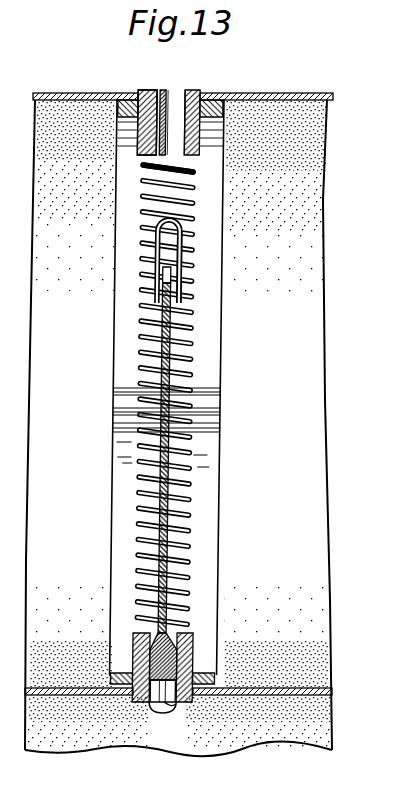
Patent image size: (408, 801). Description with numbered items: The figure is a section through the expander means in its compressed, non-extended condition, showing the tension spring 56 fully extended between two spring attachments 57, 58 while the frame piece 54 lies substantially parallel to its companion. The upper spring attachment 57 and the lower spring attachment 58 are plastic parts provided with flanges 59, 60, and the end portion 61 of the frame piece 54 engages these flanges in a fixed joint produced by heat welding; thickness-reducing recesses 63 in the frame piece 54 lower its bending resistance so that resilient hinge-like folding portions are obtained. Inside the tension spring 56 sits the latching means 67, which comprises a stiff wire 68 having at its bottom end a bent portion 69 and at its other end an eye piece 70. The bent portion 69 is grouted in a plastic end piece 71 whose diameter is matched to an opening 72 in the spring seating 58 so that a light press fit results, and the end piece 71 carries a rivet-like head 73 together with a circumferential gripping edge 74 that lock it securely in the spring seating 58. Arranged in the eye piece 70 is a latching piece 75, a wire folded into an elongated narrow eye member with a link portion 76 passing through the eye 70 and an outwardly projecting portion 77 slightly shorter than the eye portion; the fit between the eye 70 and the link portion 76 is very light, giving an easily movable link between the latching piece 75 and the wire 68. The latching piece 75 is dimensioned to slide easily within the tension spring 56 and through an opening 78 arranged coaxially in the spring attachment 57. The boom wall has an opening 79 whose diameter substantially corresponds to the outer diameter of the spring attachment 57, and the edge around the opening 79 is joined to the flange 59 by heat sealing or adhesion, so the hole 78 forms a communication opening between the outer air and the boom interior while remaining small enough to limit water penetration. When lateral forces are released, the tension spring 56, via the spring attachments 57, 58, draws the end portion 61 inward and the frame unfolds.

The frame piece 54 is at (118, 302).
The tension spring 56 is at (198, 457).
The spring attachment 57 is at (200, 93).
The spring attachment 58 is at (186, 672).
The flange 59 is at (250, 97).
The flange 60 is at (213, 690).
The end portion 61 is at (128, 112).
The thickness-reducing recess 63 is at (118, 398).
The latching means 67 is at (158, 229).
The stiff wire 68 is at (179, 394).
The bent portion 69 is at (184, 658).
The eye piece 70 is at (174, 274).
The plastic end piece 71 is at (178, 705).
The opening 72 is at (151, 640).
The rivet-like head 73 is at (156, 705).
The circumferential gripping edge 74 is at (178, 640).
The latching piece 75 is at (185, 233).
The link portion 76 is at (164, 276).
The outwardly projecting portion 77 is at (182, 300).
The opening 78 is at (168, 98).
The opening 79 is at (139, 92).